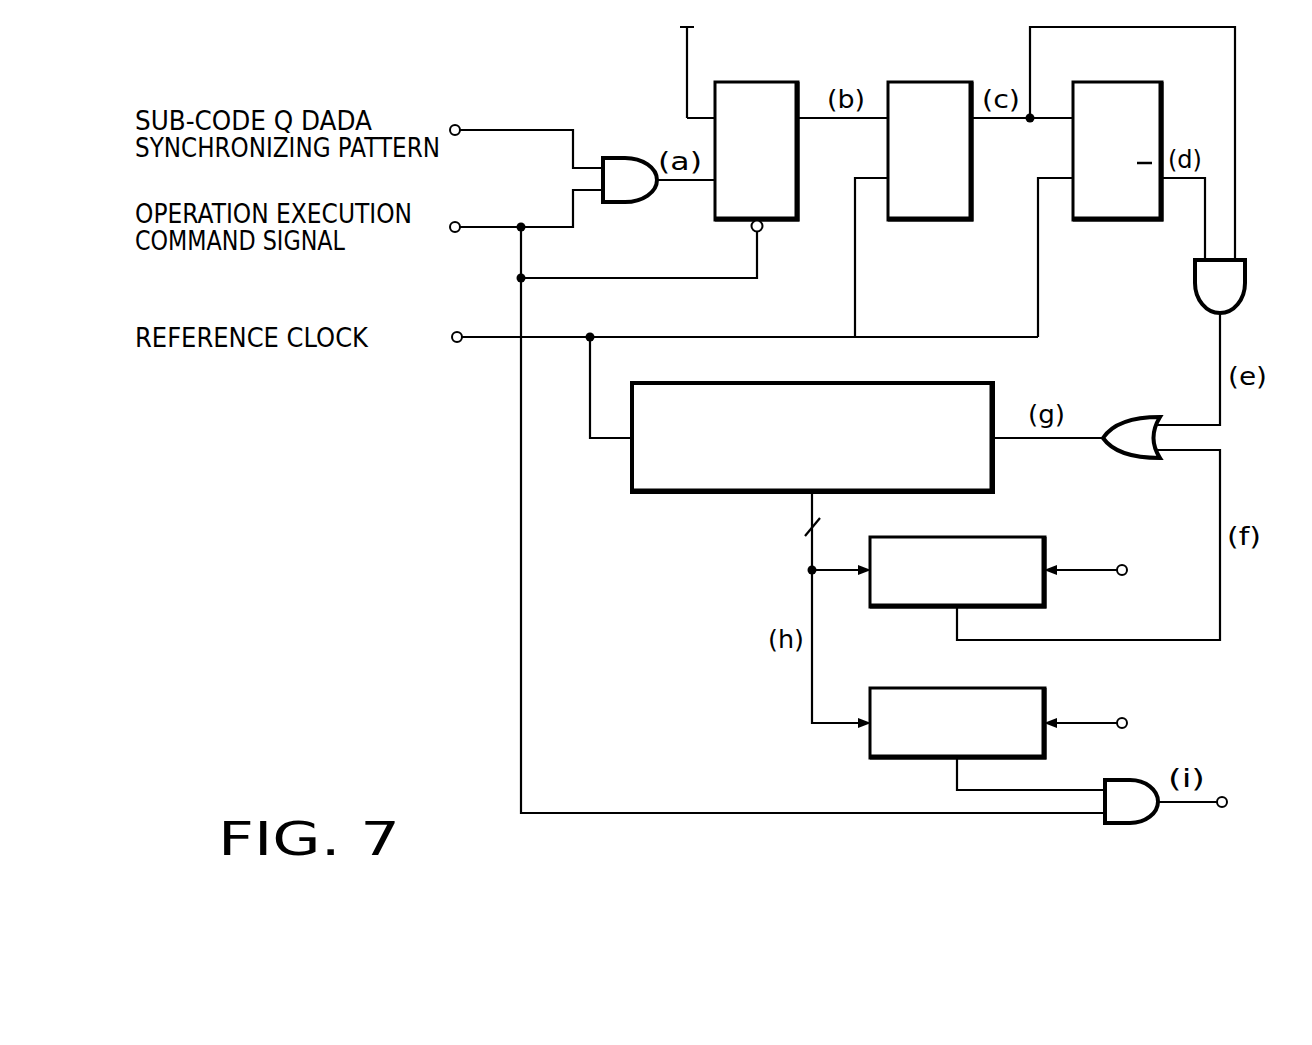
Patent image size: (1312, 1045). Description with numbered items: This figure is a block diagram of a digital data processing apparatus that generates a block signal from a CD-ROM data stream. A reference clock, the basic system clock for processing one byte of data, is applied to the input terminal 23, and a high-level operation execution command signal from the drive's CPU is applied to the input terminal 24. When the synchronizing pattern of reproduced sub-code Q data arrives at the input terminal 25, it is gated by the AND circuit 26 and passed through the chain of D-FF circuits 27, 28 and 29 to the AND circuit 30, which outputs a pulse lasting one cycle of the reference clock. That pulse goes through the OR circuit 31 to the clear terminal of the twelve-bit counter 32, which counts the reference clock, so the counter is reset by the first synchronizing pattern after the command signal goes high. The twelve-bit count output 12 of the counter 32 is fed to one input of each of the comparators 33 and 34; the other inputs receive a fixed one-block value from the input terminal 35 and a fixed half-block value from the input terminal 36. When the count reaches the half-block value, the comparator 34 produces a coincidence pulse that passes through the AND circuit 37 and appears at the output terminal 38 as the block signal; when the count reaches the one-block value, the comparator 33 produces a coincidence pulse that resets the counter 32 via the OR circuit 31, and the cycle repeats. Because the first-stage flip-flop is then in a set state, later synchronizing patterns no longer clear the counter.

The 12-bit output bus 12 is at (831, 529).
The input terminal 23 is at (460, 342).
The input terminal 24 is at (458, 232).
The input terminal 25 is at (458, 127).
The AND circuit 26 is at (625, 158).
The D-FF circuit 27 is at (757, 82).
The D-FF circuit 28 is at (930, 82).
The D-FF circuit 29 is at (1115, 82).
The AND circuit 30 is at (1246, 287).
The OR circuit 31 is at (1127, 417).
The 12-bit counter 32 is at (810, 383).
The comparator 33 is at (1015, 537).
The comparator 34 is at (920, 688).
The input terminal 35 is at (1121, 565).
The input terminal 36 is at (1123, 717).
The AND circuit 37 is at (1128, 825).
The output terminal 38 is at (1228, 802).